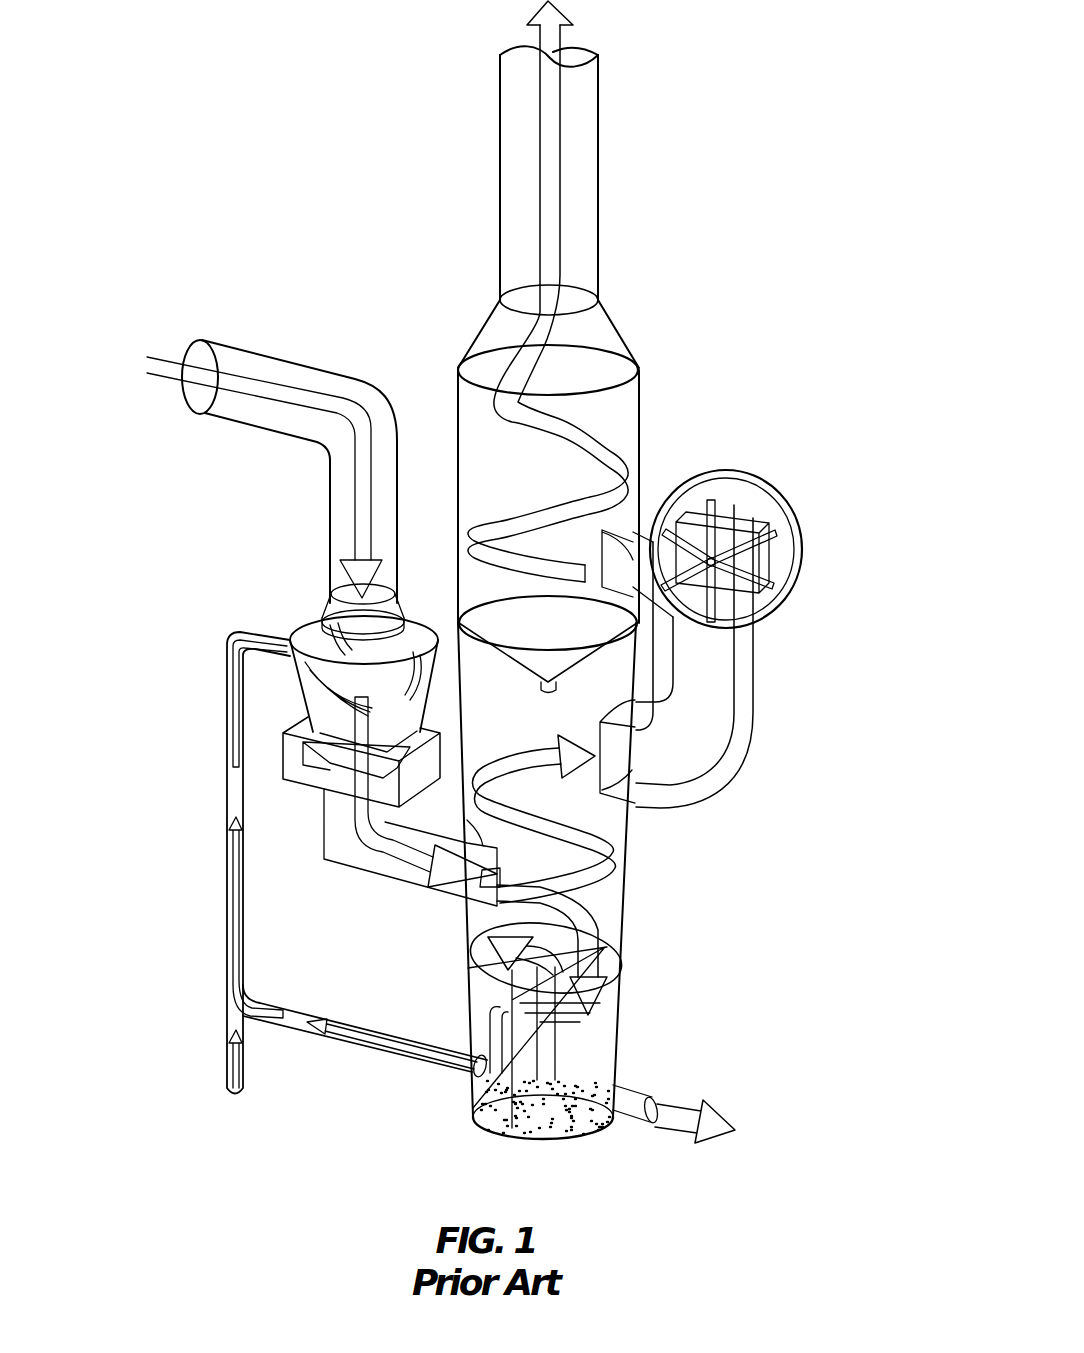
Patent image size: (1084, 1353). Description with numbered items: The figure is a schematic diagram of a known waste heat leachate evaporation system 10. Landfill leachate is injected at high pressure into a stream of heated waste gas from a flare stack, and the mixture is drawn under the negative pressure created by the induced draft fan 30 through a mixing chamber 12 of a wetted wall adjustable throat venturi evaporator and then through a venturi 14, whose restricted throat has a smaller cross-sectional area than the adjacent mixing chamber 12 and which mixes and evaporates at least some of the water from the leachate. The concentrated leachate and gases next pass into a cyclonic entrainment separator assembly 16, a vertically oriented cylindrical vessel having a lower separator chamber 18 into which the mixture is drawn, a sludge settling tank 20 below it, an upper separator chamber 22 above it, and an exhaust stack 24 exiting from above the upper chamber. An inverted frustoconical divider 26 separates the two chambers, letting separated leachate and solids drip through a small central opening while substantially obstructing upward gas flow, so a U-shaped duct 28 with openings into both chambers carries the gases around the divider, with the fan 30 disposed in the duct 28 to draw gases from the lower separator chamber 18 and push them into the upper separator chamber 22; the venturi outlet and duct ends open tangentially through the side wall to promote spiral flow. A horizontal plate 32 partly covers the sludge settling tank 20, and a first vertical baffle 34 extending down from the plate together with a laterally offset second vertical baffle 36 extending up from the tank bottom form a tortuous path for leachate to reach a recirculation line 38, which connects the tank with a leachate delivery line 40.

The leachate evaporation system 10 is at (718, 212).
The mixing chamber 12 is at (297, 688).
The venturi 14 is at (283, 760).
The cyclonic entrainment separator assembly 16 is at (467, 922).
The lower separator chamber 18 is at (612, 883).
The sludge settling tank 20 is at (607, 1059).
The upper separator chamber 22 is at (625, 422).
The exhaust stack 24 is at (583, 154).
The inverted frustoconical divider 26 is at (582, 665).
The U-shaped duct 28 is at (733, 745).
The induced draft fan 30 is at (802, 548).
The horizontal plate 32 is at (560, 943).
The first vertical baffle 34 is at (597, 1017).
The second vertical baffle 36 is at (472, 1106).
The recirculation line 38 is at (352, 1045).
The leachate delivery line 40 is at (227, 897).